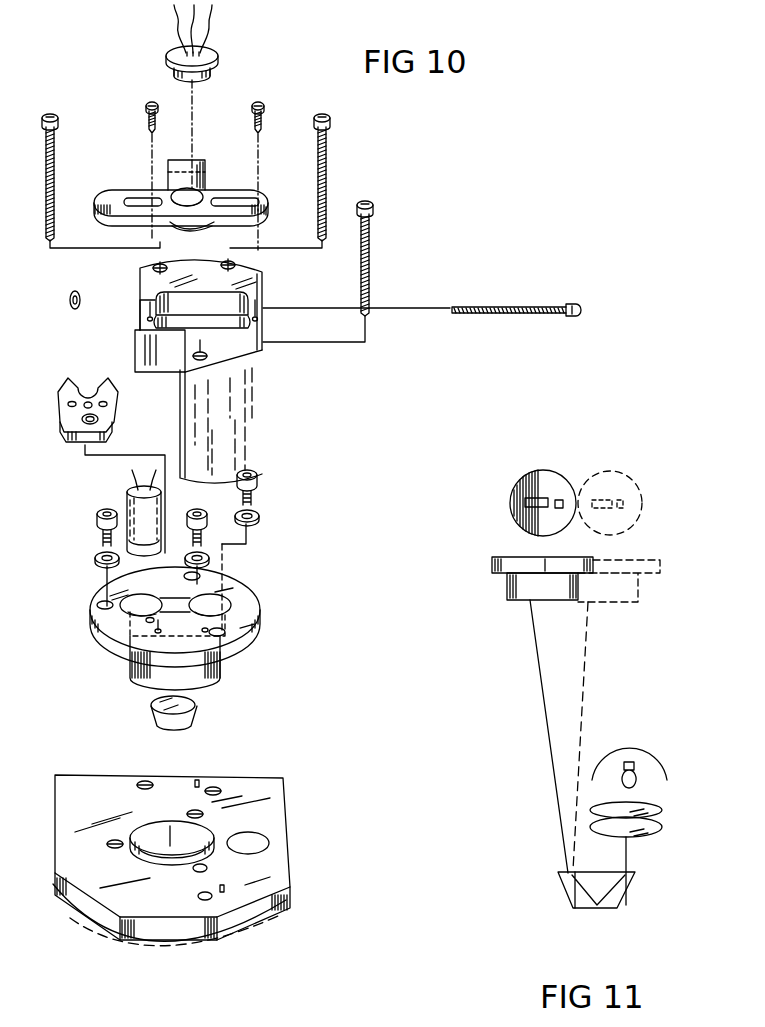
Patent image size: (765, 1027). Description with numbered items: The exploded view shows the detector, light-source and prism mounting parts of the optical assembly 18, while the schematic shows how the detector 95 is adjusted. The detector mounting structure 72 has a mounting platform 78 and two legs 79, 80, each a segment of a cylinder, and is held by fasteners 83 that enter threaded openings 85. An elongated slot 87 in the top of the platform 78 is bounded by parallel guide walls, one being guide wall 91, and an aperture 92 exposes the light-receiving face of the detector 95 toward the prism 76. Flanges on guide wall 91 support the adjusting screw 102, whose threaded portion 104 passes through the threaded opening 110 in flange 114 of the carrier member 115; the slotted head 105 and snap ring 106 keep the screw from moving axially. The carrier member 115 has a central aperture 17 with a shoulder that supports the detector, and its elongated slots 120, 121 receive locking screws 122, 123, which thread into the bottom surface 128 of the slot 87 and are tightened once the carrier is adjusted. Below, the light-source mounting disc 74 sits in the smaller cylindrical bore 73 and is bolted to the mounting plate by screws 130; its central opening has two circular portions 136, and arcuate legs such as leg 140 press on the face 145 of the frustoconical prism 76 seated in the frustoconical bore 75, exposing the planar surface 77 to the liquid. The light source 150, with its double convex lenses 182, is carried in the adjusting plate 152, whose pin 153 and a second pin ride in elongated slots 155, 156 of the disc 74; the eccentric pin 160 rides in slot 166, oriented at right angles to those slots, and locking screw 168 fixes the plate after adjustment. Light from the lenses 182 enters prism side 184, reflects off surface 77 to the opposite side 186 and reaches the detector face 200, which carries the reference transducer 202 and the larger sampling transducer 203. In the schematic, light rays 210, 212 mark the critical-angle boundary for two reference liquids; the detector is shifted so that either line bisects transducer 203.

In FIG. 10, the detector 95 is at (214, 53).
In FIG. 11, the detector 95 is at (478, 562).
In FIG. 10, the locking screw 123 is at (150, 102).
In FIG. 10, the locking screw 122 is at (258, 102).
In FIG. 10, the fasteners 83 is at (55, 179).
In FIG. 10, the optical assembly 18 is at (178, 179).
In FIG. 10, the elongated slot 121 is at (127, 196).
In FIG. 10, the elongated slot 120 is at (243, 200).
In FIG. 10, the central aperture 17 is at (200, 193).
In FIG. 10, the threaded opening 110 is at (175, 163).
In FIG. 10, the flange 114 is at (200, 164).
In FIG. 10, the carrier member 115 is at (274, 222).
In FIG. 10, the adjusting screw 102 is at (534, 306).
In FIG. 10, the threaded portion 104 is at (500, 320).
In FIG. 10, the slotted adjusting head 105 is at (568, 304).
In FIG. 10, the detector mounting structure 72 is at (210, 370).
In FIG. 10, the mounting platform 78 is at (245, 272).
In FIG. 10, the bottom surface of elongated slot 128 is at (182, 306).
In FIG. 10, the aperture 92 is at (265, 322).
In FIG. 10, the guide wall 91 is at (150, 298).
In FIG. 10, the leg 80 is at (138, 366).
In FIG. 10, the leg 79 is at (241, 437).
In FIG. 10, the elongated slot 87 is at (136, 321).
In FIG. 10, the snap ring 106 is at (73, 289).
In FIG. 10, the adjusting plate 152 is at (84, 400).
In FIG. 10, the pin 153 is at (68, 404).
In FIG. 10, the eccentric pin 160 is at (107, 402).
In FIG. 10, the locking screw 168 is at (99, 420).
In FIG. 10, the light source 150 is at (118, 494).
In FIG. 10, the cap screws and washers 130 is at (262, 489).
In FIG. 10, the light-source mounting disc 74 is at (179, 633).
In FIG. 10, the circular portions of central opening 136 is at (99, 605).
In FIG. 10, the elongated slot 155 is at (150, 620).
In FIG. 10, the elongated slot 166 is at (158, 631).
In FIG. 10, the elongated slot 156 is at (205, 630).
In FIG. 10, the arcuate leg 140 is at (208, 675).
In FIG. 10, the frustoconical prism 76 is at (190, 712).
In FIG. 10, the prism face 145 is at (160, 705).
In FIG. 11, the prism face 145 is at (612, 873).
In FIG. 10, the cylindrical bore 73 is at (188, 842).
In FIG. 10, the frustoconical bore 75 is at (170, 856).
In FIG. 10, the threaded openings 85 is at (146, 782).
In FIG. 11, the detector face 200 is at (547, 496).
In FIG. 11, the sampling transducer 203 is at (527, 500).
In FIG. 11, the reference transducer 202 is at (576, 529).
In FIG. 11, the light ray 210 is at (534, 656).
In FIG. 11, the light ray 212 is at (598, 666).
In FIG. 11, the double convex lens 182 is at (664, 816).
In FIG. 11, the prism side 184 is at (605, 898).
In FIG. 11, the prism side 186 is at (571, 890).
In FIG. 11, the liquid-contacting planar surface 77 is at (590, 910).